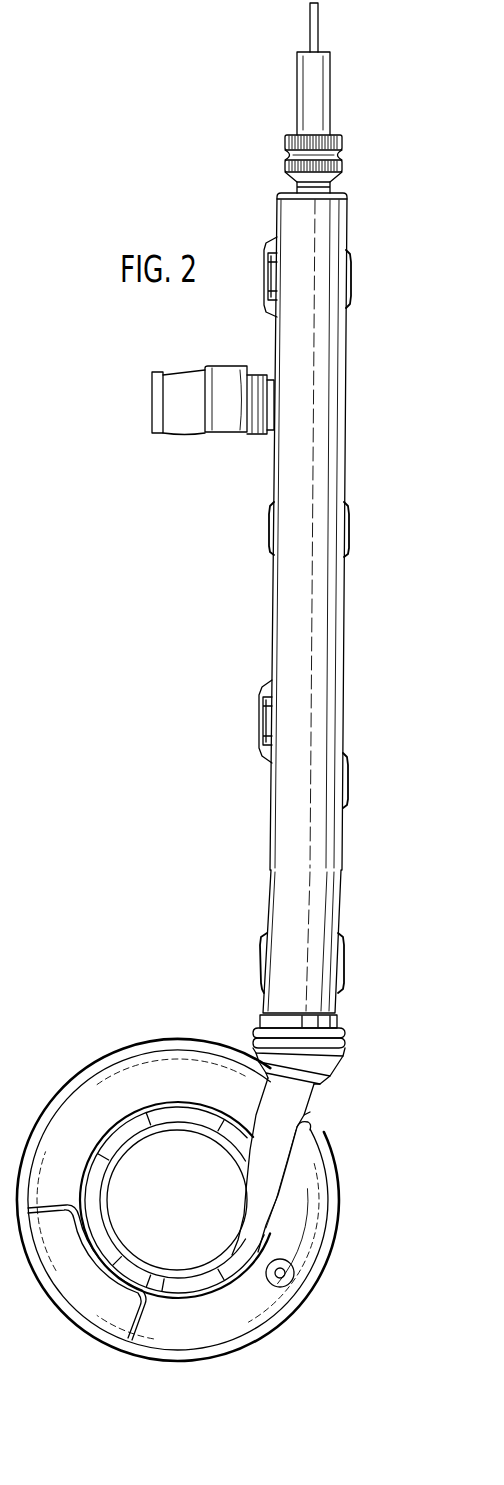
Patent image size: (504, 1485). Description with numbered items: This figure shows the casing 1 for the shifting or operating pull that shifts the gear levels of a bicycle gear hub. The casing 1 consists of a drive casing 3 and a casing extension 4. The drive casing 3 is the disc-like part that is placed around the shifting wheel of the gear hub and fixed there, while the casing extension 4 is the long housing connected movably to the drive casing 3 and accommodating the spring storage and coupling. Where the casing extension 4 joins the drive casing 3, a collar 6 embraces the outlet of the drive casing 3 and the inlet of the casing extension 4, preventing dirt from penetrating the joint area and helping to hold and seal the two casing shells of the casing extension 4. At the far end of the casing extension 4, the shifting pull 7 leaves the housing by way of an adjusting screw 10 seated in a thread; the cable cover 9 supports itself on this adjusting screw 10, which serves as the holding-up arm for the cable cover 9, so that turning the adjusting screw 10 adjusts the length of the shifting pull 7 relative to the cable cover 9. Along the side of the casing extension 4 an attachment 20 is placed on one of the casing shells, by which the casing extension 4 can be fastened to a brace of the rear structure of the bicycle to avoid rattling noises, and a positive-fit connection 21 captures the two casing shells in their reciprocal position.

The casing 1 is at (172, 1018).
The drive casing 3 is at (105, 1058).
The casing extension 4 is at (280, 633).
The collar 6 is at (343, 1025).
The shifting pull 7 is at (313, 23).
The cable cover 9 is at (322, 106).
The adjusting screw 10 is at (285, 143).
The attachment 20 is at (195, 433).
The positive-fit connection 21 is at (262, 718).